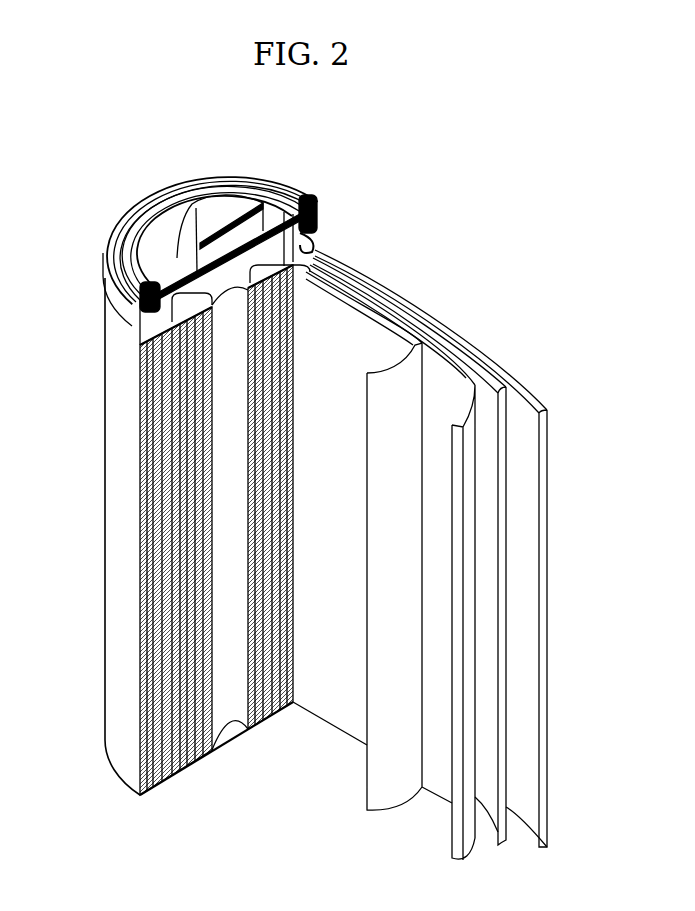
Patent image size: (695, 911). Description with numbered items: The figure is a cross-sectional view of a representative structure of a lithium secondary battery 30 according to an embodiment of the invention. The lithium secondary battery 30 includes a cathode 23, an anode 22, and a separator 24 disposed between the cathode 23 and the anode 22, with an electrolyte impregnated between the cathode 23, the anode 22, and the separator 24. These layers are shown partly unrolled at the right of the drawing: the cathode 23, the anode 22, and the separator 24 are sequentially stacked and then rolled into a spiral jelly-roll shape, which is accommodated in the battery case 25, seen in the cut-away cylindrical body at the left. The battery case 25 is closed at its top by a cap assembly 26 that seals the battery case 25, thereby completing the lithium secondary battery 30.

The anode 22 is at (533, 390).
The cathode 23 is at (447, 350).
The separator 24 is at (400, 323).
The battery case 25 is at (113, 527).
The cap assembly 26 is at (205, 210).
The lithium secondary battery 30 is at (309, 130).